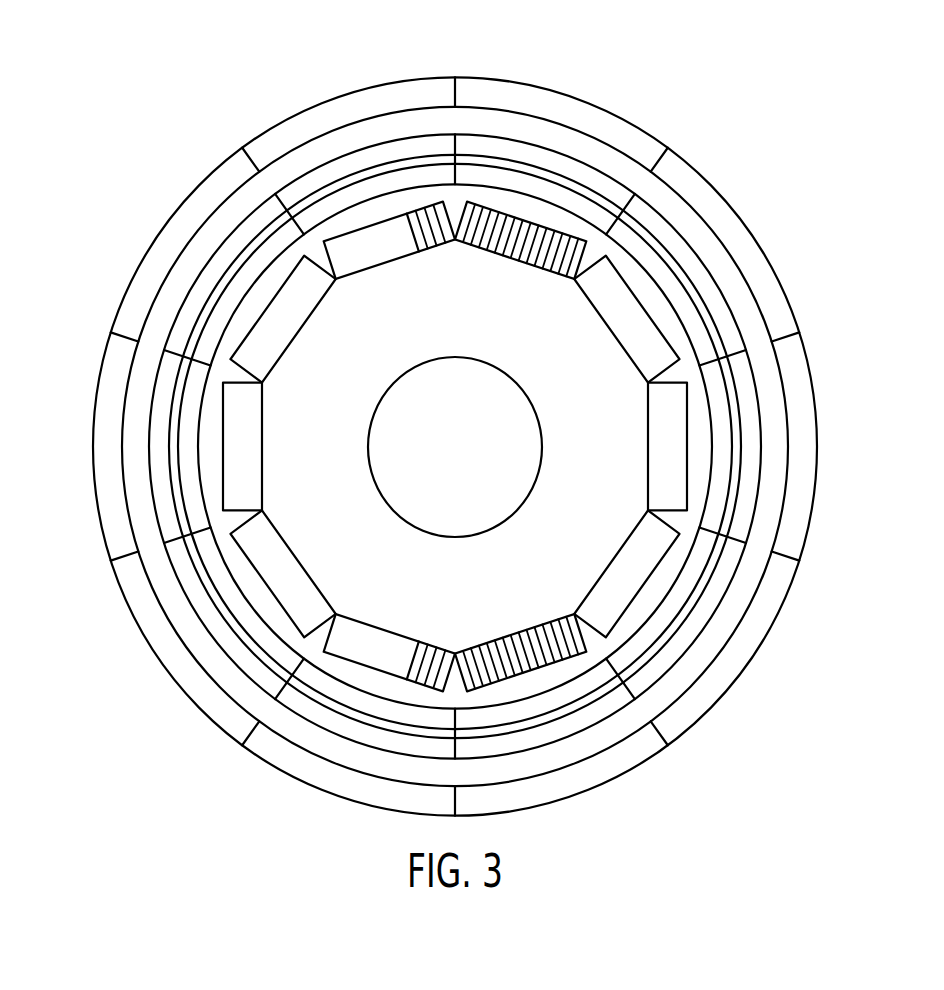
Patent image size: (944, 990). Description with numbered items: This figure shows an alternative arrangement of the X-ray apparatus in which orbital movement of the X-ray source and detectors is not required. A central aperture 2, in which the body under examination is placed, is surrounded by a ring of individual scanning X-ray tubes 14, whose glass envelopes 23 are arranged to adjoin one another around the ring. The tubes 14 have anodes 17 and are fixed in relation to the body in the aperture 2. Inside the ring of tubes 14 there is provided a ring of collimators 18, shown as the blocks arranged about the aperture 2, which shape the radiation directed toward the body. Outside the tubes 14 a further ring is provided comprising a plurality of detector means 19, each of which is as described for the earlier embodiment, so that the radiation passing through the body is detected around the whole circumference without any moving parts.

The aperture 2 is at (372, 447).
The X-ray tubes 14 is at (588, 175).
The anodes 17 is at (538, 165).
The collimators 18 is at (647, 446).
The detector means 19 is at (728, 200).
The glass envelopes 23 is at (497, 122).